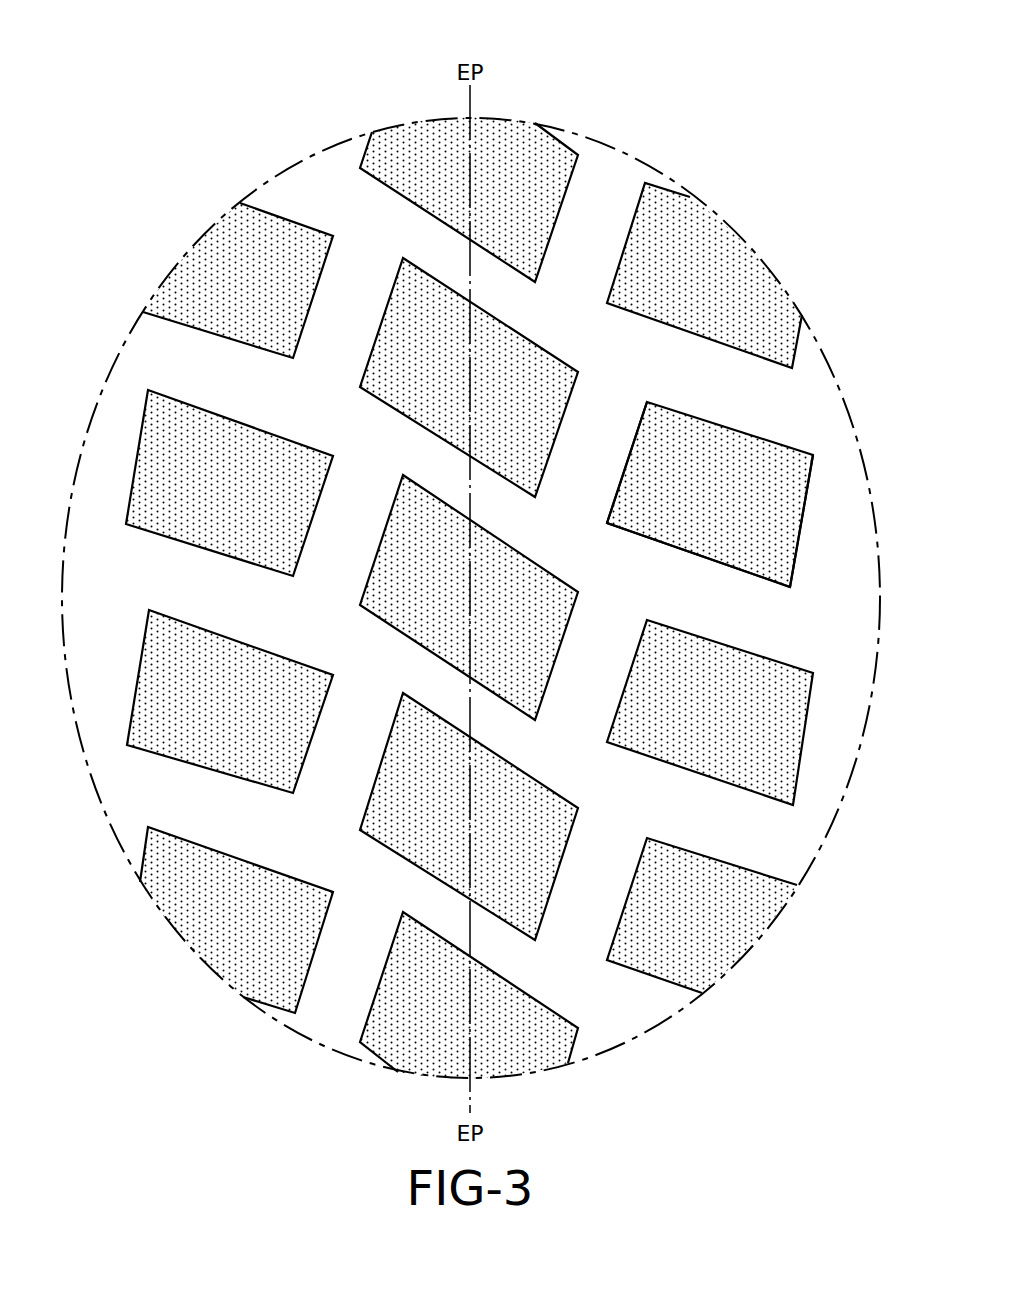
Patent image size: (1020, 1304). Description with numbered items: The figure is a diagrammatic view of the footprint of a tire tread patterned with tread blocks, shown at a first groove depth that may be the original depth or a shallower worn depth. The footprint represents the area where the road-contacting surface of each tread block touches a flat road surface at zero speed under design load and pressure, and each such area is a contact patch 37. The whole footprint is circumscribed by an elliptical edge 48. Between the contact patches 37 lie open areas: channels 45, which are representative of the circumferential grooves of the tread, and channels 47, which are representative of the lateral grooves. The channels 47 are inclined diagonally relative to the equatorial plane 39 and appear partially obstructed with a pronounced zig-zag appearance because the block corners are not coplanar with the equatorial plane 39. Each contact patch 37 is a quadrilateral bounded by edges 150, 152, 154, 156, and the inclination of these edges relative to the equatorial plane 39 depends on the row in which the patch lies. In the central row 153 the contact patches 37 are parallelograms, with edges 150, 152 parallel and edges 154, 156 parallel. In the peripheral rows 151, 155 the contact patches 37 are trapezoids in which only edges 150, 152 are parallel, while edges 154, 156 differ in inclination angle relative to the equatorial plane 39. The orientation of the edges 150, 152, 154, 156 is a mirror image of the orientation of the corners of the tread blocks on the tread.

The contact patch 37 is at (228, 268).
The equatorial plane 39 is at (470, 498).
The channels 45 is at (330, 197).
The channels 47 is at (193, 367).
The elliptical edge 48 is at (335, 1050).
The edge 150 is at (720, 422).
The row 151 is at (228, 186).
The edge 152 is at (700, 560).
The central row 153 is at (540, 110).
The edge 154 is at (630, 450).
The row 155 is at (712, 187).
The edge 156 is at (803, 513).